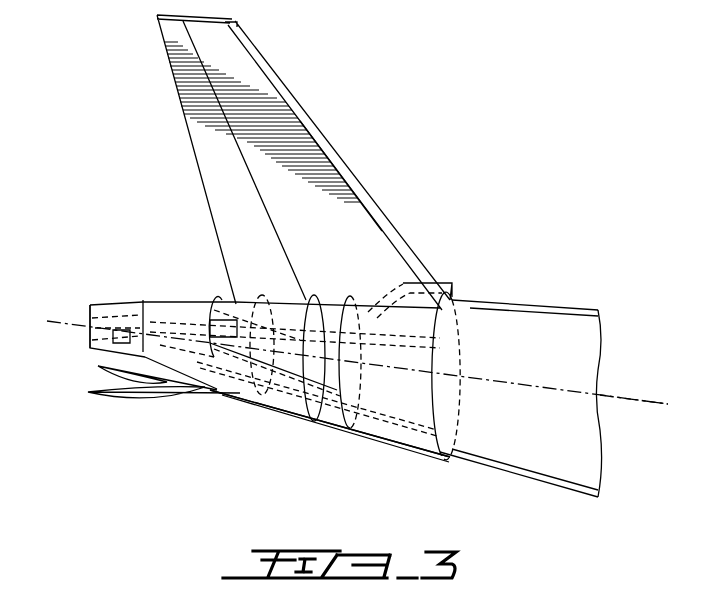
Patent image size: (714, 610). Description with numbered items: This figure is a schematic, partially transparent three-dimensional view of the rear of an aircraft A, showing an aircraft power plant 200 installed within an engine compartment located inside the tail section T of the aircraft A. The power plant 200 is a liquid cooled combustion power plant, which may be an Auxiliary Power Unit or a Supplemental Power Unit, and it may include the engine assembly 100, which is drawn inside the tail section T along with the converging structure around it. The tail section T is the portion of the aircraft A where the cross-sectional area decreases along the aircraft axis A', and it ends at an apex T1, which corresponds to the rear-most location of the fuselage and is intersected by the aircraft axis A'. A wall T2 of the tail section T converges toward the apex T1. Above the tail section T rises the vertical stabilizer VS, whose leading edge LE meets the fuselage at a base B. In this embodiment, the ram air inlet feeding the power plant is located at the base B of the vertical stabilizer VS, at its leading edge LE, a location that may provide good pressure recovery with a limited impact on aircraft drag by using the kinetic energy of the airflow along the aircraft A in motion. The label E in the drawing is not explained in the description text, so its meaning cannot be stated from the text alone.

The vertical stabilizer VS is at (303, 162).
The leading edge of the vertical stabilizer LE is at (381, 203).
The base of the vertical stabilizer B is at (455, 297).
The aircraft A is at (522, 361).
The aircraft axis A' is at (645, 365).
The aircraft power plant 200 is at (171, 270).
The engine assembly 100 is at (160, 306).
The apex T1 is at (86, 345).
The wall of the tail section T2 is at (225, 403).
The tail section T is at (320, 425).
The engine / exhaust region E is at (106, 487).